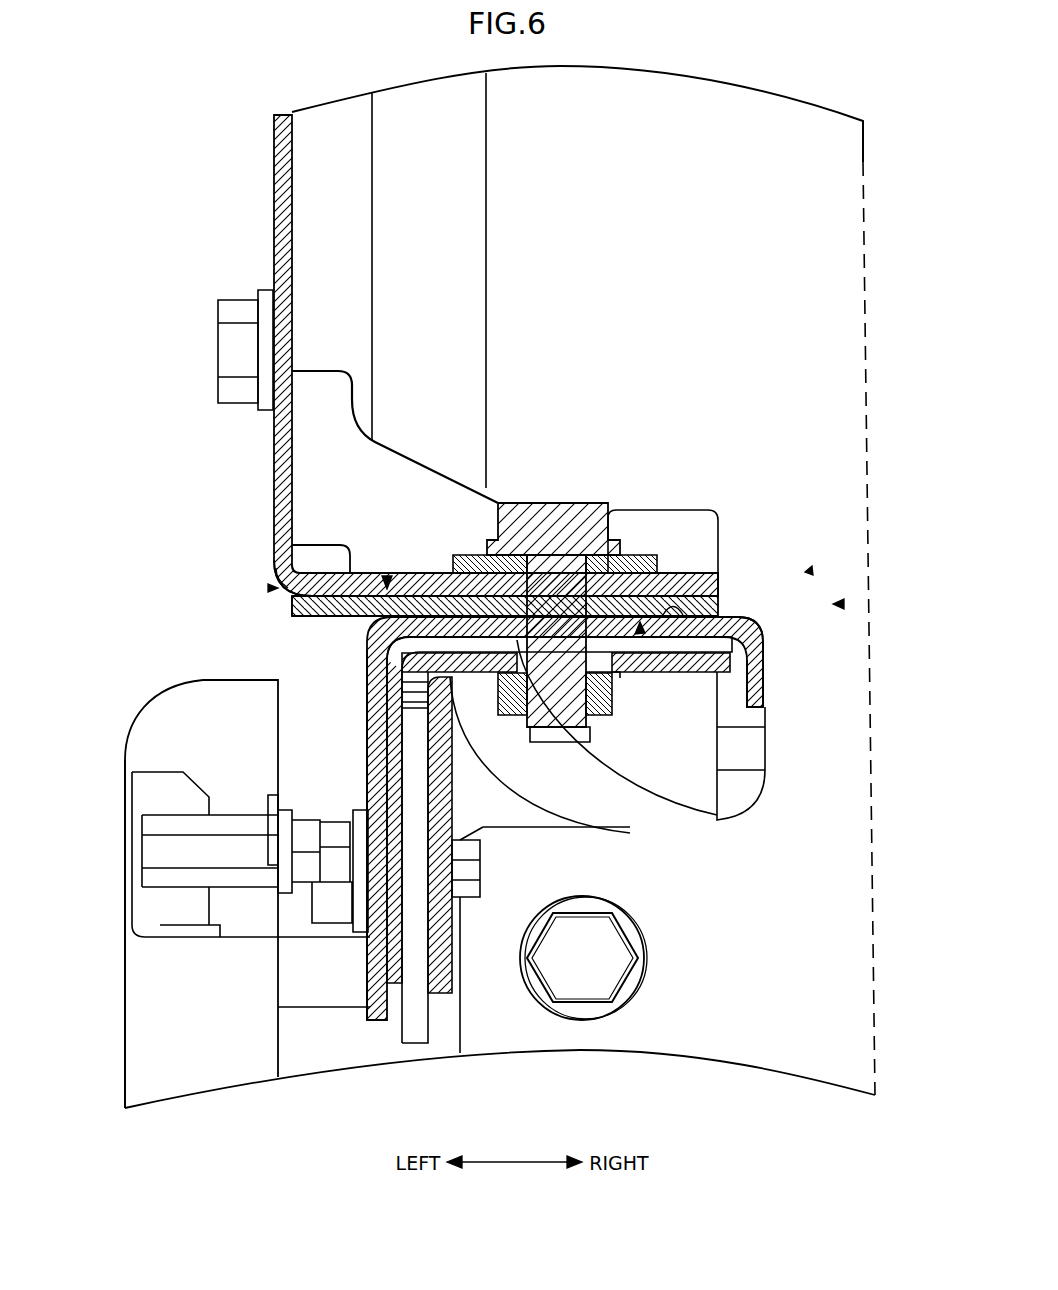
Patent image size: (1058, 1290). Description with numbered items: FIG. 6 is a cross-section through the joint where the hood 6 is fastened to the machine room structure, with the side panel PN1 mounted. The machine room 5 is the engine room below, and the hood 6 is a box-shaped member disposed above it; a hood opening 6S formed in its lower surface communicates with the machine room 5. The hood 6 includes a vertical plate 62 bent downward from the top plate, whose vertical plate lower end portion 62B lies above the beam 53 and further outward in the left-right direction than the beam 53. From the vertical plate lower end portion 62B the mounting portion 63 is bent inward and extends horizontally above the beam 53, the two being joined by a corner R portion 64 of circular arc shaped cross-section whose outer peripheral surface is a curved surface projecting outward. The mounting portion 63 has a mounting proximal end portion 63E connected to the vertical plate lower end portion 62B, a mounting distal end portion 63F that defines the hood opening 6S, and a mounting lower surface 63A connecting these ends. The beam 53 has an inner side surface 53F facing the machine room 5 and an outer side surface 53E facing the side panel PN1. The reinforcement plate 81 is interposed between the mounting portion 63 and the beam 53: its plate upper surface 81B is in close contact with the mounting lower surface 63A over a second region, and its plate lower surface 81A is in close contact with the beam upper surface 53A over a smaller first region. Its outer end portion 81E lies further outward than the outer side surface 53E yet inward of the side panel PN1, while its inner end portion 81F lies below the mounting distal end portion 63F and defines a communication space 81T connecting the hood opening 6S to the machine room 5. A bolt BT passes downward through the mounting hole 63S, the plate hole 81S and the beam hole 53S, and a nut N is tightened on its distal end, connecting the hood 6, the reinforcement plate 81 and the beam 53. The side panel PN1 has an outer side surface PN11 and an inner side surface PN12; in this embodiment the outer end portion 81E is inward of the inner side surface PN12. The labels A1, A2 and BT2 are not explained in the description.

The hood 6 is at (266, 183).
The hood opening 6S is at (808, 571).
The vertical plate 62 is at (283, 197).
The vertical plate lower end portion 62B is at (275, 572).
The mounting portion 63 is at (433, 583).
The mounting proximal end portion 63E is at (300, 603).
The mounting hole 63S is at (592, 570).
The mounting lower surface 63A is at (697, 582).
The mounting distal end portion 63F is at (722, 580).
The corner R portion 64 is at (275, 588).
The direction A2 is at (387, 583).
The reinforcement plate 81 is at (327, 617).
The outer end portion 81E is at (290, 612).
The plate hole 81S is at (592, 602).
The communication space 81T is at (840, 604).
The plate lower surface 81A is at (532, 623).
The plate upper surface 81B is at (767, 687).
The inner end portion 81F is at (764, 617).
The beam 53 is at (730, 822).
The outer side surface 53E is at (367, 705).
The inner side surface 53F is at (767, 663).
The beam upper surface 53A is at (450, 680).
The beam hole 53S is at (612, 680).
The direction A1 is at (645, 628).
The bolt BT is at (612, 503).
The bolt BT2 is at (245, 350).
The nut N is at (612, 718).
The machine room 5 is at (803, 1023).
The side panel PN1 is at (202, 870).
The outer side surface PN11 is at (125, 1020).
The inner side surface PN12 is at (282, 1040).